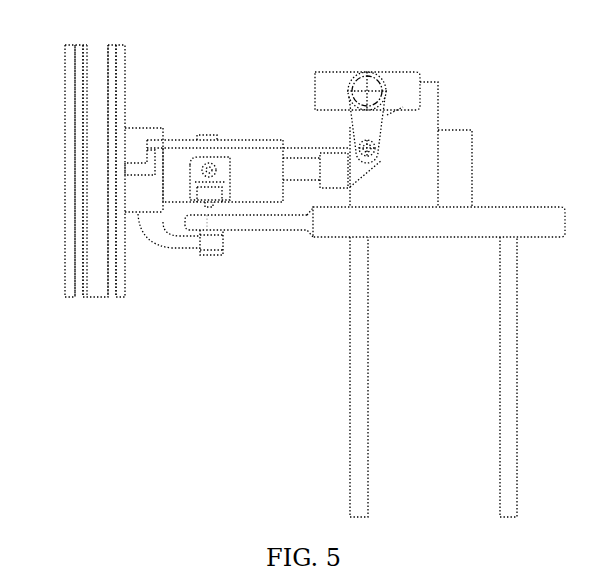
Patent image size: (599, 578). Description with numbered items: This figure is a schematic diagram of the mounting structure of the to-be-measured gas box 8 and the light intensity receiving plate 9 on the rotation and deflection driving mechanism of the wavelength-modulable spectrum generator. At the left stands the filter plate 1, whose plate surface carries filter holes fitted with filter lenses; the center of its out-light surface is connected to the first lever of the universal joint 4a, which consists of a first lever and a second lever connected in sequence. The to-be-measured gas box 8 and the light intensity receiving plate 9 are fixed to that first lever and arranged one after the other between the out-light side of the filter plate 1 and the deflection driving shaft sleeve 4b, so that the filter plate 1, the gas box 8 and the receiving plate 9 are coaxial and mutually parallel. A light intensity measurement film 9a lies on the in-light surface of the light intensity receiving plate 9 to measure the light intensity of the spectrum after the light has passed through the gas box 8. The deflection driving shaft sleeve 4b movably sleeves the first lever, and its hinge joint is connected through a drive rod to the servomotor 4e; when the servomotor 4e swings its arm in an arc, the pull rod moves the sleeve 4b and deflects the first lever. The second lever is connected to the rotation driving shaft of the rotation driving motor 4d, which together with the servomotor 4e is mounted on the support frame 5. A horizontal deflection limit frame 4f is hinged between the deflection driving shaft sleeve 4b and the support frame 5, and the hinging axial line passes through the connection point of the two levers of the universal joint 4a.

The filter plate 1 is at (67, 80).
The to-be-measured gas box 8 is at (96, 80).
The light intensity measurement film 9a is at (118, 45).
The light intensity receiving plate 9 is at (124, 77).
The deflection driving shaft sleeve 4b is at (204, 121).
The universal joint 4a is at (248, 112).
The servomotor 4e is at (409, 79).
The rotation driving motor 4d is at (462, 132).
The horizontal deflection limit frame 4f is at (252, 232).
The support frame 5 is at (513, 206).